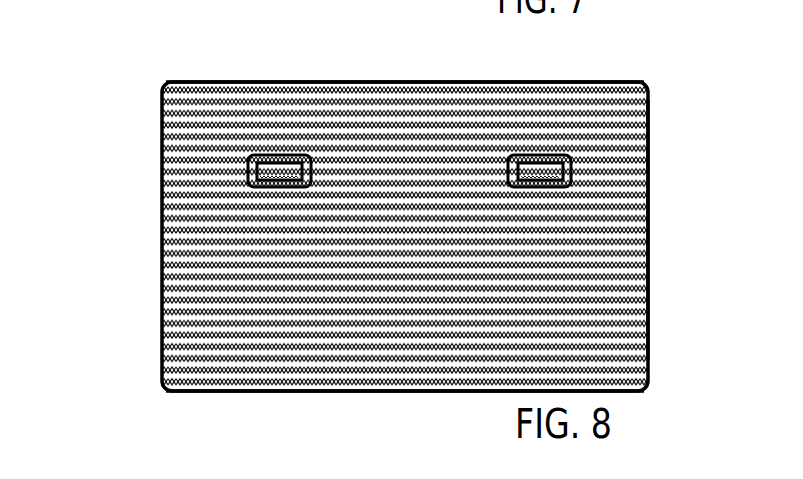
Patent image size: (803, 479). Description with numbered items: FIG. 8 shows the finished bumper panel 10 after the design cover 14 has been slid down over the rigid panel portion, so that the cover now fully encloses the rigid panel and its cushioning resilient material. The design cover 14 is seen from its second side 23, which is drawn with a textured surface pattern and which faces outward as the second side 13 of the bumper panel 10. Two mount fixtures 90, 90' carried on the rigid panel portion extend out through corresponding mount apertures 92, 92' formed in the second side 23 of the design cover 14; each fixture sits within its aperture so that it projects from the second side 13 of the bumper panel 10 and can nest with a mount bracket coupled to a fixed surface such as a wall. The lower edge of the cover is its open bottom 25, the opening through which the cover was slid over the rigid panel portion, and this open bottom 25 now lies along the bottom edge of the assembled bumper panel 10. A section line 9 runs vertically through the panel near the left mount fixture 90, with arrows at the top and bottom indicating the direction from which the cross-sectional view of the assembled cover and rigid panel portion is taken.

The section line 9 is at (270, 417).
The bumper panel 10 is at (152, 147).
The second side of the bumper panel 13 is at (630, 193).
The design cover 14 is at (390, 81).
The second side of the design cover 23 is at (630, 265).
The open bottom 25 is at (177, 391).
The mount fixture 90 is at (294, 104).
The mount fixture 90' is at (523, 111).
The mount aperture 92 is at (271, 118).
The mount aperture 92' is at (575, 116).